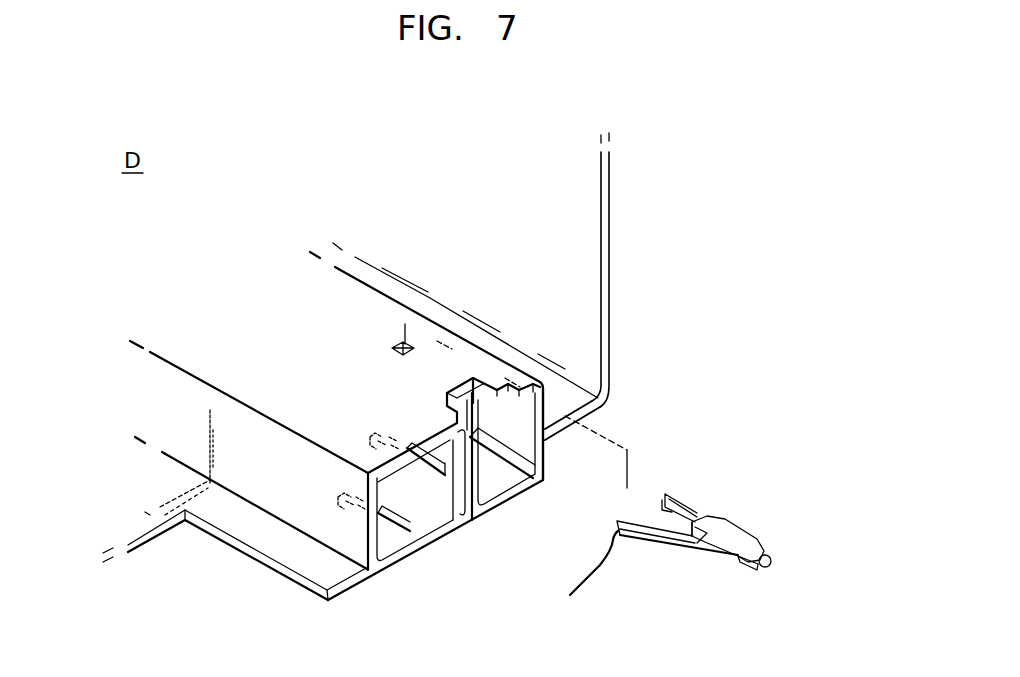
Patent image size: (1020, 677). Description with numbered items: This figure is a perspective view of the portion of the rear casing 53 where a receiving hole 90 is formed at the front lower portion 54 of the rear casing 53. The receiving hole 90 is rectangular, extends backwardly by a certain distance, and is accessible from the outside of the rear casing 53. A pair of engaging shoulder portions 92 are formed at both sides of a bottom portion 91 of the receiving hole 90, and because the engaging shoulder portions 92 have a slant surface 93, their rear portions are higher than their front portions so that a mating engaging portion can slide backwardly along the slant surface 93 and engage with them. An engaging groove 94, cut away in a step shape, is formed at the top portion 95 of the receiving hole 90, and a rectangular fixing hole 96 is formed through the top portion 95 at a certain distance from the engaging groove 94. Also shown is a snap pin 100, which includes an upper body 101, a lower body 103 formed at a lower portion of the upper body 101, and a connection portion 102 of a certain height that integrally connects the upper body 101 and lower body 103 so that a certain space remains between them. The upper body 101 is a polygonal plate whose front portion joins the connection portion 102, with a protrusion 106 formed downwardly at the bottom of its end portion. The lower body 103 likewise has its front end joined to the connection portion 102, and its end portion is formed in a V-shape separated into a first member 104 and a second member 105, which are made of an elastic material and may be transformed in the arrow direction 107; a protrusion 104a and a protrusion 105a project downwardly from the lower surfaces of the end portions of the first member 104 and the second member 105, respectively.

The rear casing 53 is at (595, 233).
The front lower portion 54 is at (570, 398).
The receiving hole 90 is at (465, 431).
The bottom portion 91 is at (478, 497).
The engaging shoulder portions 92 is at (515, 482).
The slant surface 93 is at (514, 469).
The engaging groove 94 is at (470, 378).
The top portion 95 is at (462, 480).
The fixing hole 96 is at (400, 346).
The snap pin 100 is at (692, 518).
The upper body 101 is at (759, 534).
The connection portion 102 is at (769, 566).
The lower body 103 is at (741, 567).
The first member 104 is at (633, 536).
The protrusion 104a is at (577, 579).
The second member 105 is at (684, 507).
The protrusion 105a is at (653, 498).
The protrusion 106 is at (689, 541).
The arrow direction 107 is at (625, 512).